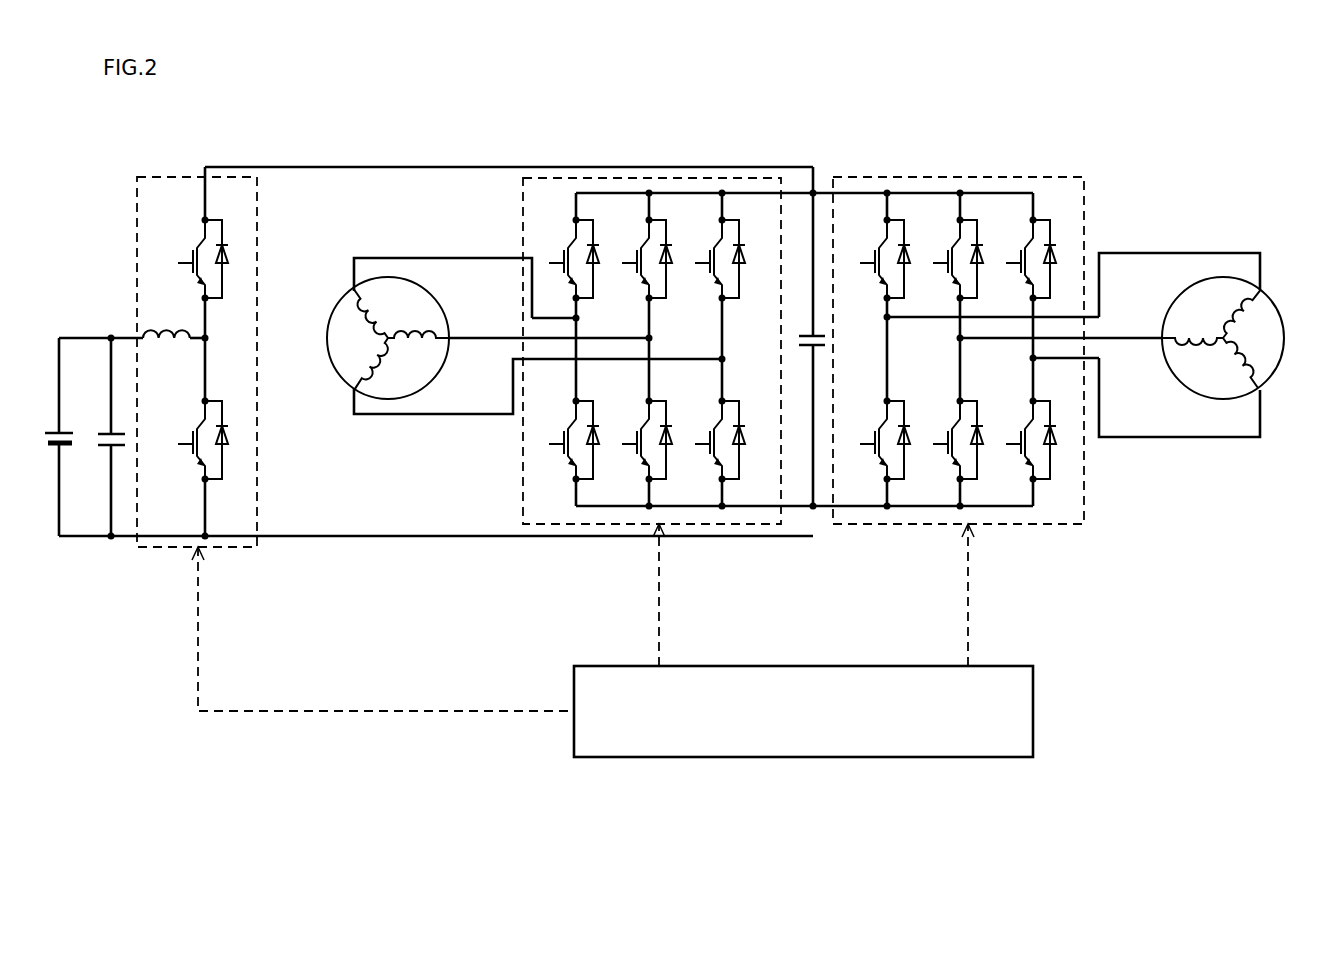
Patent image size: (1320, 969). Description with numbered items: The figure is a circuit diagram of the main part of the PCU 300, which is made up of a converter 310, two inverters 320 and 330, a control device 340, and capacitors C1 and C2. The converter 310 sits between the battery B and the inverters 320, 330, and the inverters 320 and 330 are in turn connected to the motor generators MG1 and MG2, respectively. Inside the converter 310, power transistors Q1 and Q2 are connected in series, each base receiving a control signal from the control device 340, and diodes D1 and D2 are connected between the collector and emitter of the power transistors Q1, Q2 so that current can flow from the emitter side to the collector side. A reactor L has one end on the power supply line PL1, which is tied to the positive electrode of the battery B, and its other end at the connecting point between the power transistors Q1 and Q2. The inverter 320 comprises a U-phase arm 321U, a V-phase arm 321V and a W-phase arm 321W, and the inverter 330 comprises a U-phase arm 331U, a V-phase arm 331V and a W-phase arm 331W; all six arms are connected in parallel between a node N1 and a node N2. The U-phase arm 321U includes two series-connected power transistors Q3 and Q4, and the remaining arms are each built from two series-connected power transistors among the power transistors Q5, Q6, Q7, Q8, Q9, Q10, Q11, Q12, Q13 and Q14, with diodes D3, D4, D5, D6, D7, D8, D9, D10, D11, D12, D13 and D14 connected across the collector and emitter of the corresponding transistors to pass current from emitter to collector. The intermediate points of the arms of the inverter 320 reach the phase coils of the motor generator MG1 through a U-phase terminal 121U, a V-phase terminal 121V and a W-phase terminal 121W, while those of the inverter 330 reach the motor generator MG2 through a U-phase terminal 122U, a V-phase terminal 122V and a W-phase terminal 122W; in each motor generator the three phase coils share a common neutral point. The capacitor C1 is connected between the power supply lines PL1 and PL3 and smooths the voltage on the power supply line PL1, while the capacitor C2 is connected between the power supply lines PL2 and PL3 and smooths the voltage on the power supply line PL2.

The PCU 300 is at (780, 108).
The converter 310 is at (160, 177).
The inverter 320 is at (968, 177).
The inverter 330 is at (669, 177).
The control device 340 is at (805, 666).
The battery B is at (50, 430).
The capacitor C1 is at (107, 430).
The capacitor C2 is at (803, 333).
The reactor L is at (162, 330).
The power supply line PL1 is at (77, 338).
The power supply line PL2 is at (415, 167).
The power supply line PL3 is at (430, 536).
The node N1 is at (815, 190).
The node N2 is at (815, 508).
The motor generator MG1 is at (1272, 302).
The motor generator MG2 is at (340, 302).
The power transistor Q1 is at (188, 259).
The power transistor Q2 is at (188, 440).
The power transistor Q3 is at (869, 259).
The power transistor Q4 is at (869, 440).
The power transistor Q5 is at (942, 259).
The power transistor Q6 is at (942, 440).
The power transistor Q7 is at (1015, 259).
The power transistor Q8 is at (1015, 440).
The power transistor Q9 is at (558, 259).
The power transistor Q10 is at (554, 440).
The power transistor Q11 is at (627, 259).
The power transistor Q12 is at (627, 440).
The power transistor Q13 is at (700, 259).
The power transistor Q14 is at (700, 440).
The diode D1 is at (230, 259).
The diode D2 is at (230, 440).
The diode D3 is at (912, 259).
The diode D4 is at (912, 440).
The diode D5 is at (985, 259).
The diode D6 is at (985, 440).
The diode D7 is at (1058, 259).
The diode D8 is at (1058, 440).
The diode D9 is at (601, 259).
The diode D10 is at (608, 440).
The diode D11 is at (681, 259).
The diode D12 is at (681, 440).
The diode D13 is at (754, 259).
The diode D14 is at (754, 440).
The U-phase terminal 121U is at (1212, 253).
The V-phase terminal 121V is at (1130, 338).
The W-phase terminal 121W is at (1163, 438).
The U-phase terminal 122U is at (393, 258).
The V-phase terminal 122V is at (480, 337).
The W-phase terminal 122W is at (428, 417).
The U-phase arm 321U is at (882, 331).
The V-phase arm 321V is at (953, 351).
The W-phase arm 321W is at (1027, 371).
The U-phase arm 331U is at (625, 331).
The V-phase arm 331V is at (698, 351).
The W-phase arm 331W is at (772, 370).